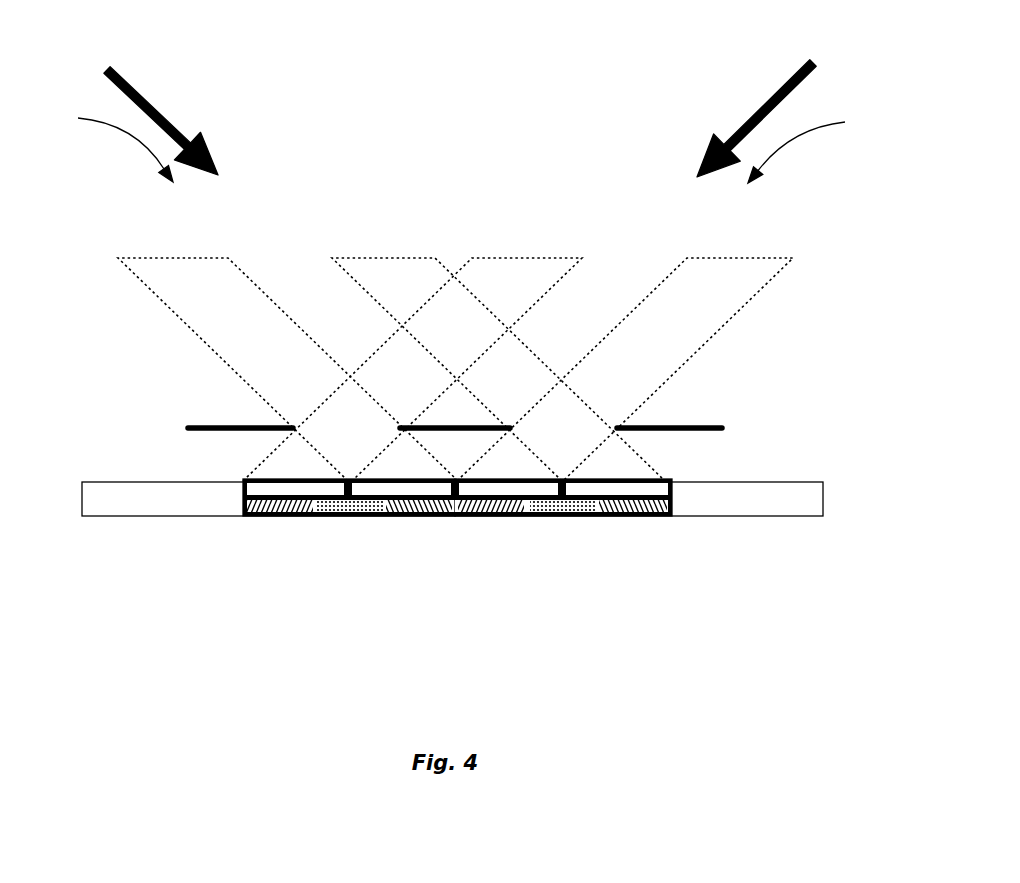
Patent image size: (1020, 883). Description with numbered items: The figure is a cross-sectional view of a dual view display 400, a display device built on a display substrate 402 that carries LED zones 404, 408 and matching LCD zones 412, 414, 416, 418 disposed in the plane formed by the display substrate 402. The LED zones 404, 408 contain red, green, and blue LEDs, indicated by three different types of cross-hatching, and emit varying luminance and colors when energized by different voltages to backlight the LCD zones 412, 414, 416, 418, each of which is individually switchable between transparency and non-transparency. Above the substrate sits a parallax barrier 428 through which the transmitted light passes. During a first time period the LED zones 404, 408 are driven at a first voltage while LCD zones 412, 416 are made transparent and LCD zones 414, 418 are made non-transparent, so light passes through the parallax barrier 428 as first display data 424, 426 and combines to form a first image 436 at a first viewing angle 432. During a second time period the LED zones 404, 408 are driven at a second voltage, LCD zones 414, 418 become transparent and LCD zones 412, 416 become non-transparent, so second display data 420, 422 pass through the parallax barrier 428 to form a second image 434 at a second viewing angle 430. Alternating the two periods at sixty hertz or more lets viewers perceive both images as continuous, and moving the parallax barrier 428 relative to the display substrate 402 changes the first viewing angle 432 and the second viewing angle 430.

The dual view display 400 is at (423, 138).
The display substrate 402 is at (137, 517).
The LED zone 404 is at (350, 517).
The LED zone 408 is at (562, 517).
The LCD zone 412 is at (290, 480).
The LCD zone 414 is at (400, 480).
The LCD zone 416 is at (513, 480).
The LCD zone 418 is at (618, 480).
The second display data 420 is at (132, 257).
The second display data 422 is at (348, 257).
The first display data 424 is at (563, 257).
The first display data 426 is at (780, 257).
The parallax barrier 428 is at (165, 420).
The second viewing angle 430 is at (150, 107).
The first viewing angle 432 is at (770, 97).
The second image 434 is at (102, 146).
The first image 436 is at (820, 147).